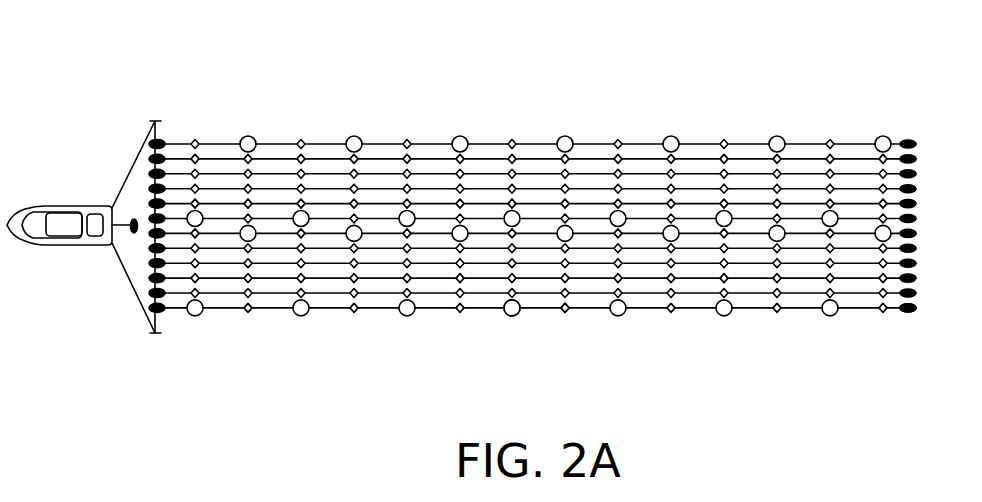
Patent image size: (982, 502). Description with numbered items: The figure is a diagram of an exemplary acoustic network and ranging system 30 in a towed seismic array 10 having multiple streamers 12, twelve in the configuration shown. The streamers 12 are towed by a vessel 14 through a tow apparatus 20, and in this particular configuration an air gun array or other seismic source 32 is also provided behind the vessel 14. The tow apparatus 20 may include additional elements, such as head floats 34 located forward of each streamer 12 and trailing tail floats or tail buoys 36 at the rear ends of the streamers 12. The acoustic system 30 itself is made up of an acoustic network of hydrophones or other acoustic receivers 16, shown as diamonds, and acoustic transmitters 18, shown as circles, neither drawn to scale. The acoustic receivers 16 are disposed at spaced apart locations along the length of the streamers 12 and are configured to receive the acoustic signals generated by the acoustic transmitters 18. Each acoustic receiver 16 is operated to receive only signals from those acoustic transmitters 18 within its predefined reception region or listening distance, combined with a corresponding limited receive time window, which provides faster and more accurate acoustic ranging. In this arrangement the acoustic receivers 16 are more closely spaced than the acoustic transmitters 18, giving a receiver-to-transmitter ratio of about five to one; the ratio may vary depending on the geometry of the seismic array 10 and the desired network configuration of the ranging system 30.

The acoustic network and ranging system 30 is at (99, 65).
The towed seismic array 10 is at (150, 113).
The streamer 12 is at (220, 310).
The vessel 14 is at (82, 207).
The acoustic receiver 16 is at (566, 330).
The acoustic transmitter 18 is at (504, 329).
The tow apparatus 20 is at (127, 278).
The seismic source 32 is at (132, 217).
The head float 34 is at (158, 312).
The tail buoy 36 is at (909, 313).